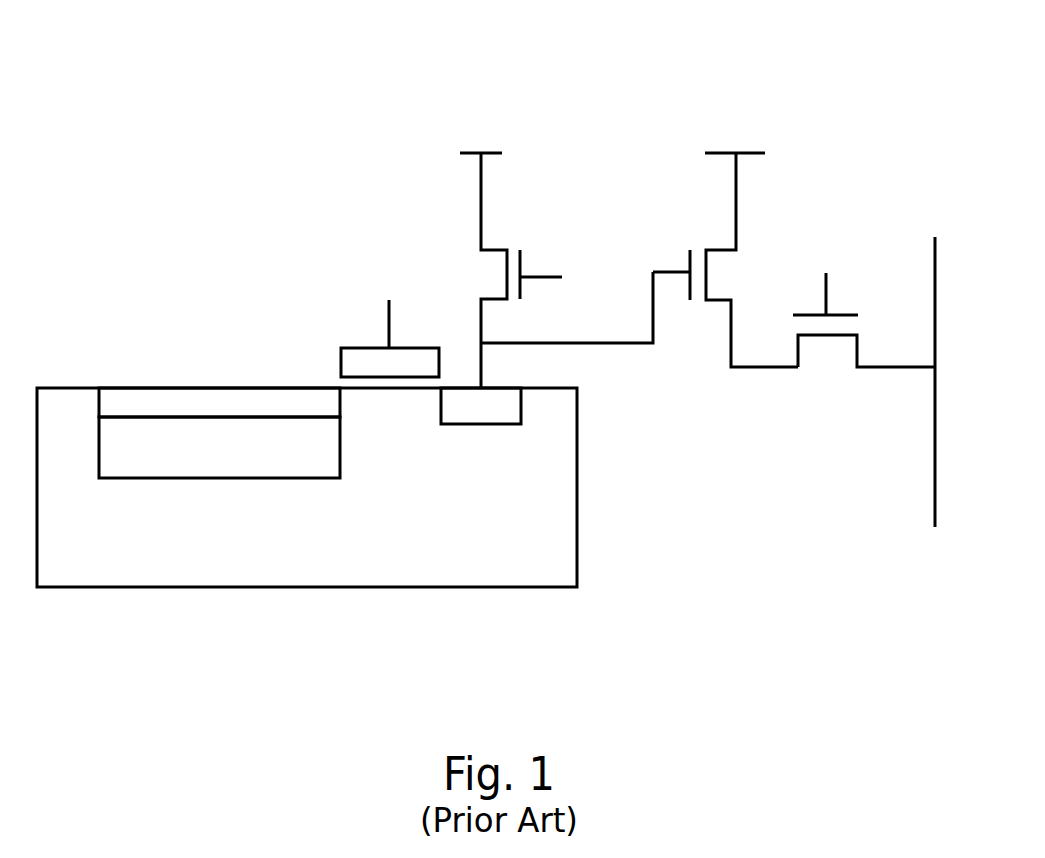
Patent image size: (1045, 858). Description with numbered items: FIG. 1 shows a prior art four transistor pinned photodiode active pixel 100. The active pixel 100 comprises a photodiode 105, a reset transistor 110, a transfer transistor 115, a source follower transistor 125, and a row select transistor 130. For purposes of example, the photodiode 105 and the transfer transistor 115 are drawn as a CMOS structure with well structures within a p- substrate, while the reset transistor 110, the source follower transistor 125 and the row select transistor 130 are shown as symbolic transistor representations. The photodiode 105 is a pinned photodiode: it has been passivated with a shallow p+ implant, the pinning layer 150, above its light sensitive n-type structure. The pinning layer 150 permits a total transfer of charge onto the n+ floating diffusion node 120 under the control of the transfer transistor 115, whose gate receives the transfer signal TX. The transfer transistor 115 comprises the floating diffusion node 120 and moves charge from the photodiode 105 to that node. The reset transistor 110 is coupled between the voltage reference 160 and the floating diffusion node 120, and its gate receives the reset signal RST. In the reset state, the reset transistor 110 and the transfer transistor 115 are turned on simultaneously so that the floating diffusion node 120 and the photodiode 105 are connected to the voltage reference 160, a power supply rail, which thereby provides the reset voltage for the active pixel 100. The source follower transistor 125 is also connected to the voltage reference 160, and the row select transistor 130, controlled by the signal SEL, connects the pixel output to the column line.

The active pixel 100 is at (175, 98).
The photodiode 105 is at (160, 478).
The reset transistor 110 is at (512, 243).
The transfer transistor 115 is at (348, 337).
The floating diffusion node 120 is at (486, 425).
The source follower transistor 125 is at (690, 235).
The row select transistor 130 is at (856, 288).
The pinning layer 150 is at (146, 406).
The voltage reference 160 is at (470, 155).